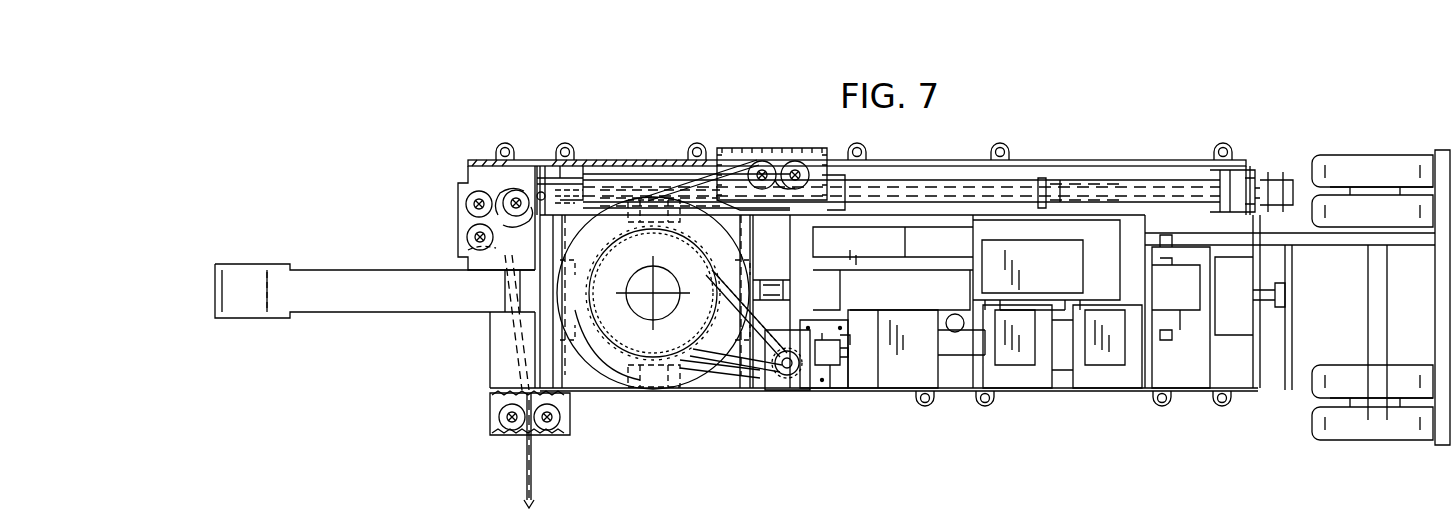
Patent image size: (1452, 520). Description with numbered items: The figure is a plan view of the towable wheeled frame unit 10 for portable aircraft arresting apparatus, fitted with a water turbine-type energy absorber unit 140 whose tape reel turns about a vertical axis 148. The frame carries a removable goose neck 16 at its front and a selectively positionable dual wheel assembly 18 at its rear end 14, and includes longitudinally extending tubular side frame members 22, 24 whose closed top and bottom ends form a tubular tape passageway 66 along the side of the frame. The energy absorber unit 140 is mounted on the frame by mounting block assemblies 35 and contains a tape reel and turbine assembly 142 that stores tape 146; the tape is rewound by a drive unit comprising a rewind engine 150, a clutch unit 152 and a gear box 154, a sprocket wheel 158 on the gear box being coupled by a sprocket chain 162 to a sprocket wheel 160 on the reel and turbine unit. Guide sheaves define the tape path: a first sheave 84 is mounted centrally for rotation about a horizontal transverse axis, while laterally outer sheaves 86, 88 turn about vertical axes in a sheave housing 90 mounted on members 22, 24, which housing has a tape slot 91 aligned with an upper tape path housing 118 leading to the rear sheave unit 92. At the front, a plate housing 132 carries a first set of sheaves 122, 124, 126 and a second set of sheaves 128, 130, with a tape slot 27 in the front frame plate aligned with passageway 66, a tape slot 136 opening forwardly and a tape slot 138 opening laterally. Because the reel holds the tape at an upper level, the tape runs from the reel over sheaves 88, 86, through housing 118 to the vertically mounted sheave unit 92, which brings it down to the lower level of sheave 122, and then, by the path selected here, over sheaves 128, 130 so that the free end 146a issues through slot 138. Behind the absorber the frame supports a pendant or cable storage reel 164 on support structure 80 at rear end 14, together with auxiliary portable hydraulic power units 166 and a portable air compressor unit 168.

The towable wheeled frame unit 10 is at (1136, 132).
The rear end 14 is at (1238, 158).
The goose neck 16 is at (386, 318).
The dual wheel assembly 18 is at (1373, 136).
The side frame member 22 is at (1120, 190).
The side frame member 24 is at (1158, 178).
The tape slot 27 is at (546, 178).
The mounting block assemblies 35 is at (650, 200).
The tape passageway 66 is at (580, 178).
The support structure 80 is at (1240, 318).
The first sheave 84 is at (778, 280).
The laterally outer sheave 86 is at (795, 162).
The laterally outer sheave 88 is at (762, 162).
The sheave housing 90 is at (730, 136).
The tape slot 91 is at (835, 180).
The rear sheave unit 92 is at (1288, 164).
The upper tape path housing 118 is at (1066, 180).
The sheave 122 is at (516, 190).
The sheave 124 is at (466, 201).
The sheave 126 is at (468, 237).
The sheave 128 is at (552, 430).
The sheave 130 is at (508, 430).
The front sheave housing 132 is at (478, 330).
The tape slot 136 is at (465, 222).
The tape slot 138 is at (534, 440).
The water turbine-type energy absorber unit 140 is at (659, 410).
The tape reel and turbine assembly 142 is at (616, 394).
The tape 146 is at (672, 190).
The free end of the tape 146a is at (533, 500).
The vertical axis 148 is at (655, 296).
The rewind engine 150 is at (890, 388).
The clutch unit 152 is at (832, 368).
The gear box 154 is at (822, 392).
The sprocket wheel 158 is at (786, 378).
The sprocket wheel 160 is at (710, 380).
The sprocket chain 162 is at (755, 380).
The pendant or cable storage reel 164 is at (1188, 326).
The portable hydraulic power units 166 is at (1078, 408).
The portable air compressor unit 168 is at (1000, 229).